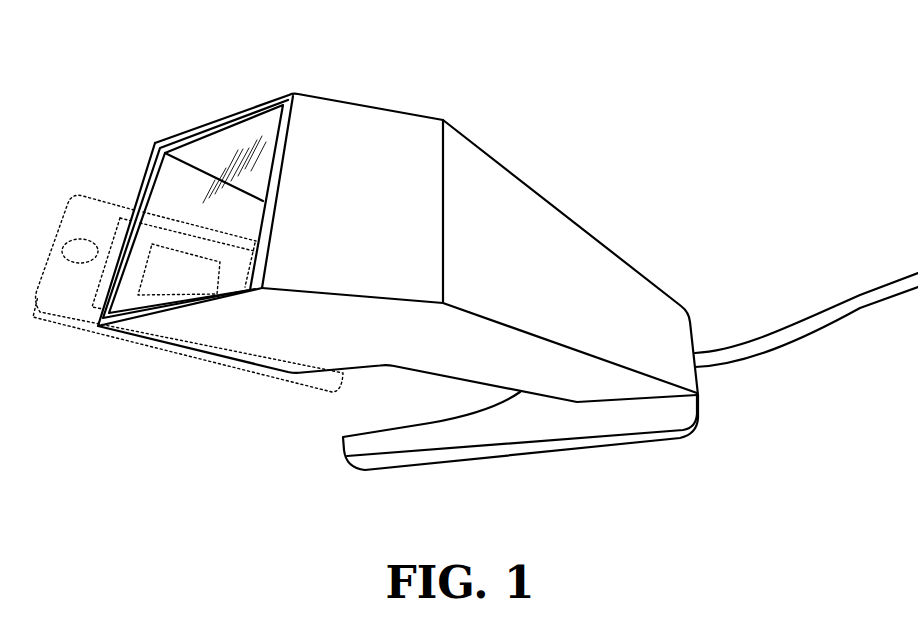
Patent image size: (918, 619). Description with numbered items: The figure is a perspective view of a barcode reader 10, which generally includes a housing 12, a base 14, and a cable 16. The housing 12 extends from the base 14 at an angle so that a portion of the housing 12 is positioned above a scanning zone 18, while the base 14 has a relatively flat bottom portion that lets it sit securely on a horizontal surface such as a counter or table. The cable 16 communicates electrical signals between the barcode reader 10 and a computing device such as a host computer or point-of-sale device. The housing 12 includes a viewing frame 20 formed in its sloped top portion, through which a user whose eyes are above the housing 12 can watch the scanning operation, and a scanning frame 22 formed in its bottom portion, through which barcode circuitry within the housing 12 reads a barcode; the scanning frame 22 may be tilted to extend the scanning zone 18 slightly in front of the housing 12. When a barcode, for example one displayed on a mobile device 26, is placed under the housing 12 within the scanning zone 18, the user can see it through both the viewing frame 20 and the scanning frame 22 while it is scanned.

The barcode reader 10 is at (507, 265).
The housing 12 is at (470, 165).
The base 14 is at (560, 427).
The cable 16 is at (827, 331).
The scanning zone 18 is at (238, 406).
The viewing frame 20 is at (217, 119).
The scanning frame 22 is at (177, 185).
The mobile device 26 is at (48, 328).